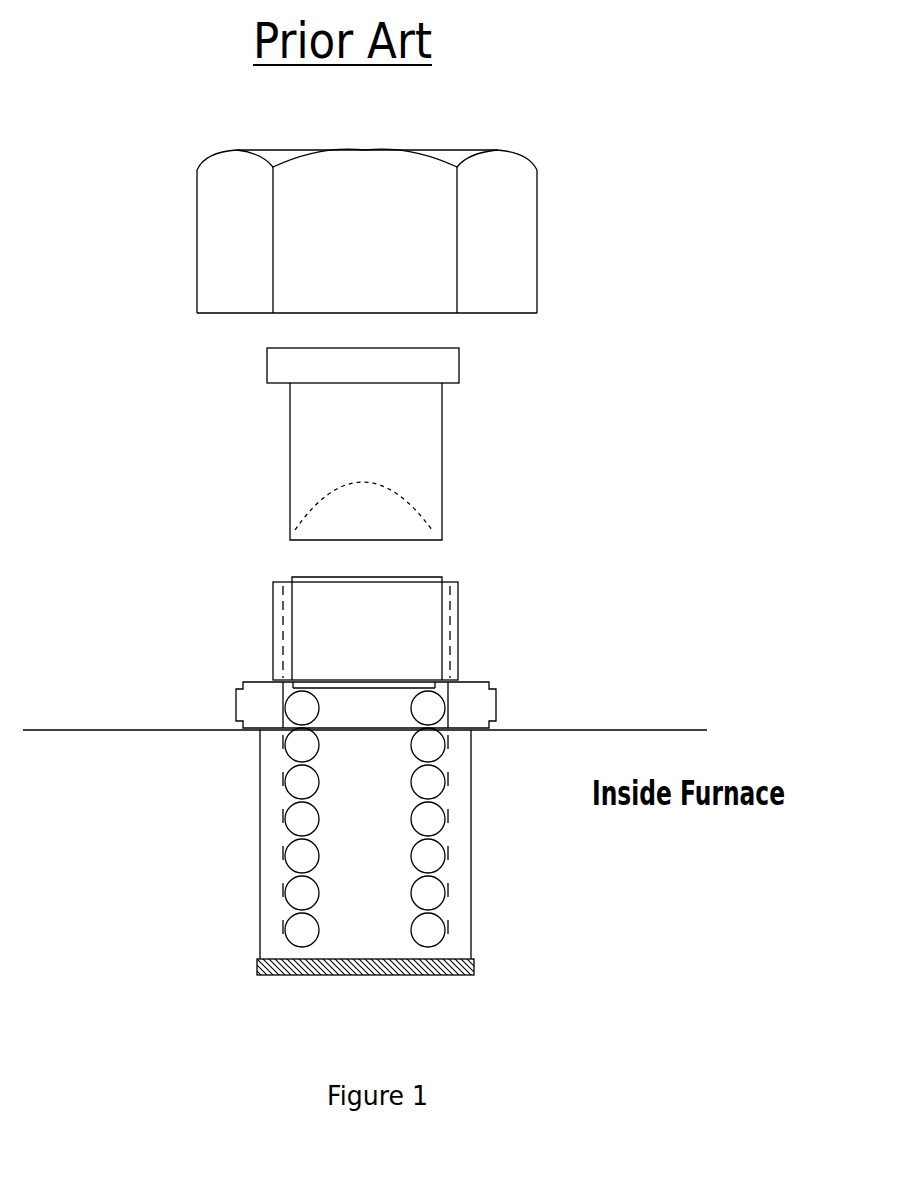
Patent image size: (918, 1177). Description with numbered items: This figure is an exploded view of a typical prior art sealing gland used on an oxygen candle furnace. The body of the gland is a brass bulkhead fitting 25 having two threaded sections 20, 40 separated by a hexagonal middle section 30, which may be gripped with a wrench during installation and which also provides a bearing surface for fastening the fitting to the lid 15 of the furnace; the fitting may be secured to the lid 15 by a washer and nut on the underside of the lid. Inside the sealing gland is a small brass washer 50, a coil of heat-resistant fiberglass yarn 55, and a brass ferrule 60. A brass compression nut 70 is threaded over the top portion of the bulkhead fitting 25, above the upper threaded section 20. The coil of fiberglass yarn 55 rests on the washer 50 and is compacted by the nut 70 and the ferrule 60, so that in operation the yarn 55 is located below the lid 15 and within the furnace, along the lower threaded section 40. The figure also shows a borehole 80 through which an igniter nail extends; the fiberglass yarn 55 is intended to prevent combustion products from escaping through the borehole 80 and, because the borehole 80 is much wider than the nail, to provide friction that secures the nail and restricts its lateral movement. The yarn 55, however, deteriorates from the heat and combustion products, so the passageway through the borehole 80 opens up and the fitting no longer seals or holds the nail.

The lid 15 is at (585, 729).
The threaded section 20 is at (492, 583).
The brass bulkhead fitting 25 is at (232, 695).
The hexagonal middle section 30 is at (496, 703).
The threaded section 40 is at (487, 735).
The brass washer 50 is at (257, 962).
The coil of heat-resistant fiberglass yarn 55 is at (302, 893).
The brass ferrule 60 is at (442, 417).
The brass compression nut 70 is at (537, 233).
The borehole 80 is at (283, 770).